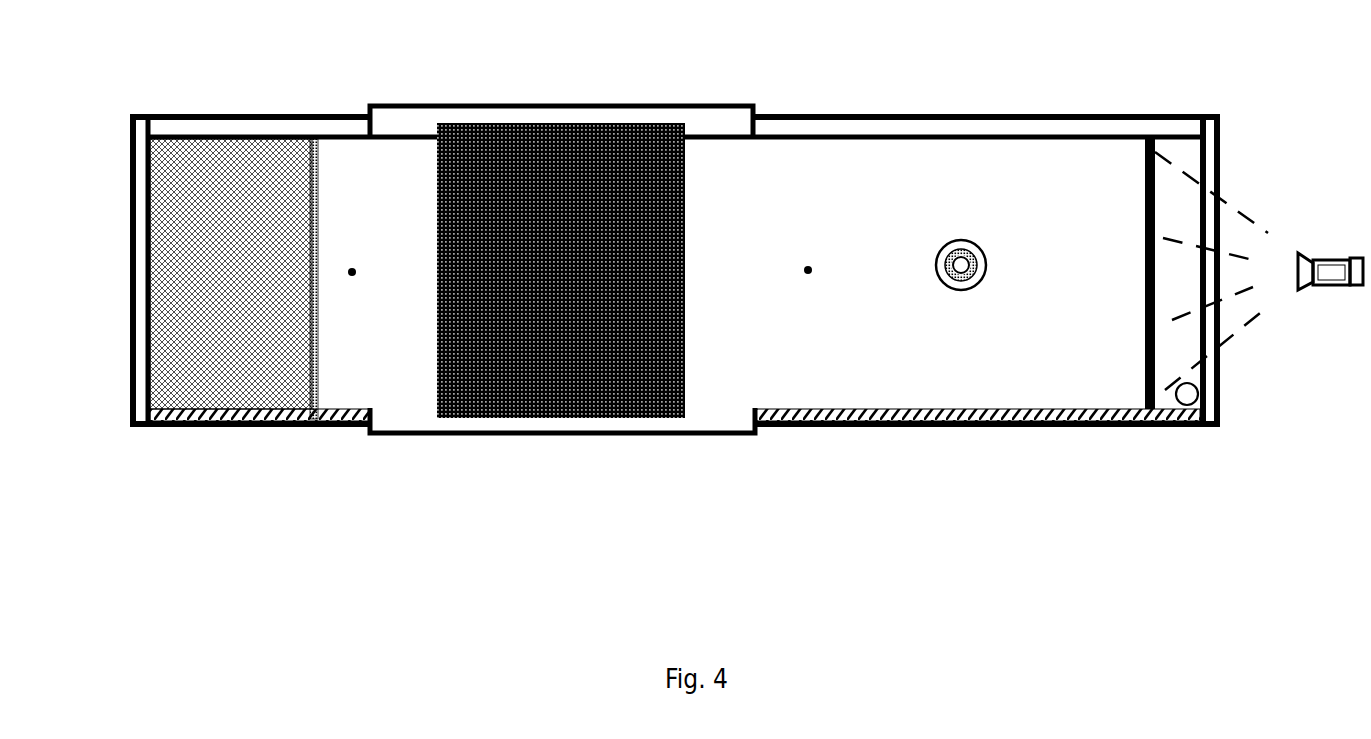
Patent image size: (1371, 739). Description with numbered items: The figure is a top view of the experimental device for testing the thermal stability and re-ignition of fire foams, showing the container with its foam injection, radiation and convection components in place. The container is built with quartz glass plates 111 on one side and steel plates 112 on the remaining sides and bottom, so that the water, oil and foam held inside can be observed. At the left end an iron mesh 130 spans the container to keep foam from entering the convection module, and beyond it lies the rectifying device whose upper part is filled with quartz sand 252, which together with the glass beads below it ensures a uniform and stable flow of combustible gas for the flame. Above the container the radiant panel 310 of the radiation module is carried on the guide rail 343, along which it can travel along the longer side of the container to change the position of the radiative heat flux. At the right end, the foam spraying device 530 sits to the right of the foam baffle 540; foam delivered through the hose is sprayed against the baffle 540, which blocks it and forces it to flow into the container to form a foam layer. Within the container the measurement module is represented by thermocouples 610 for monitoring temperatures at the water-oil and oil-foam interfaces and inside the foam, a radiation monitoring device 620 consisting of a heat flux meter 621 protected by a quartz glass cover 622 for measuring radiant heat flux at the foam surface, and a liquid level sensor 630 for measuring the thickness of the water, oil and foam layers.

The quartz glass plates 111 is at (1102, 425).
The steel plates 112 is at (1225, 423).
The iron mesh 130 is at (316, 140).
The quartz sand 252 is at (222, 290).
The radiant panel 310 is at (513, 418).
The guide rail 343 is at (428, 108).
The foam spraying device 530 is at (1336, 260).
The foam baffle 540 is at (1145, 218).
The thermocouples 610 is at (352, 276).
The radiation monitoring devices 620 is at (965, 392).
The heat flux meter 621 is at (938, 272).
The quartz glass cover 622 is at (988, 272).
The liquid level sensor 630 is at (1198, 398).